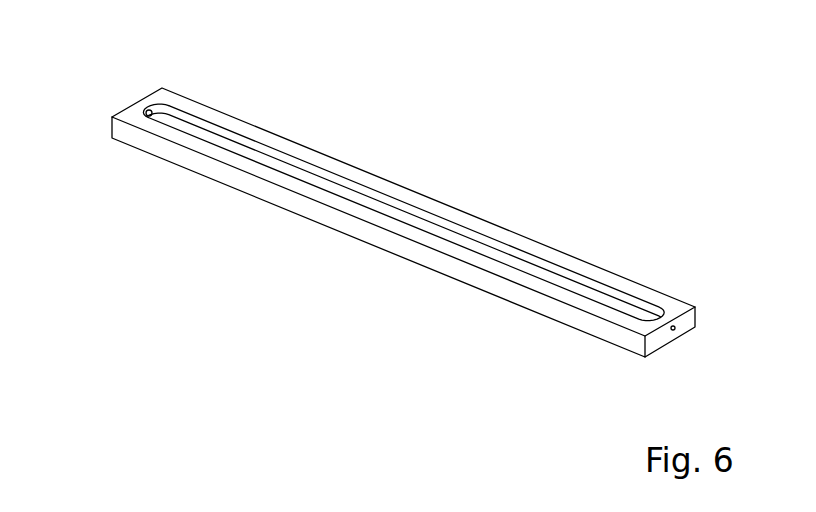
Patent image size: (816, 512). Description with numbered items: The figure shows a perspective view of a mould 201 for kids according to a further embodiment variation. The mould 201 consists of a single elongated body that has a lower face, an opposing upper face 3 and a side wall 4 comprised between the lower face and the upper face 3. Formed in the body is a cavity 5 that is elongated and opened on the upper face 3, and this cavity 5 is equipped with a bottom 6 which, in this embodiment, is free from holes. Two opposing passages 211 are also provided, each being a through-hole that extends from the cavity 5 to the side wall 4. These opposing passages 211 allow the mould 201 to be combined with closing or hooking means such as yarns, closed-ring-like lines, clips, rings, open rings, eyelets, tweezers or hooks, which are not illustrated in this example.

The mould 201 is at (400, 209).
The upper face 3 is at (400, 194).
The side wall 4 is at (112, 127).
The cavity 5 is at (379, 199).
The bottom 6 is at (158, 119).
The opposing passages 211 is at (148, 110).